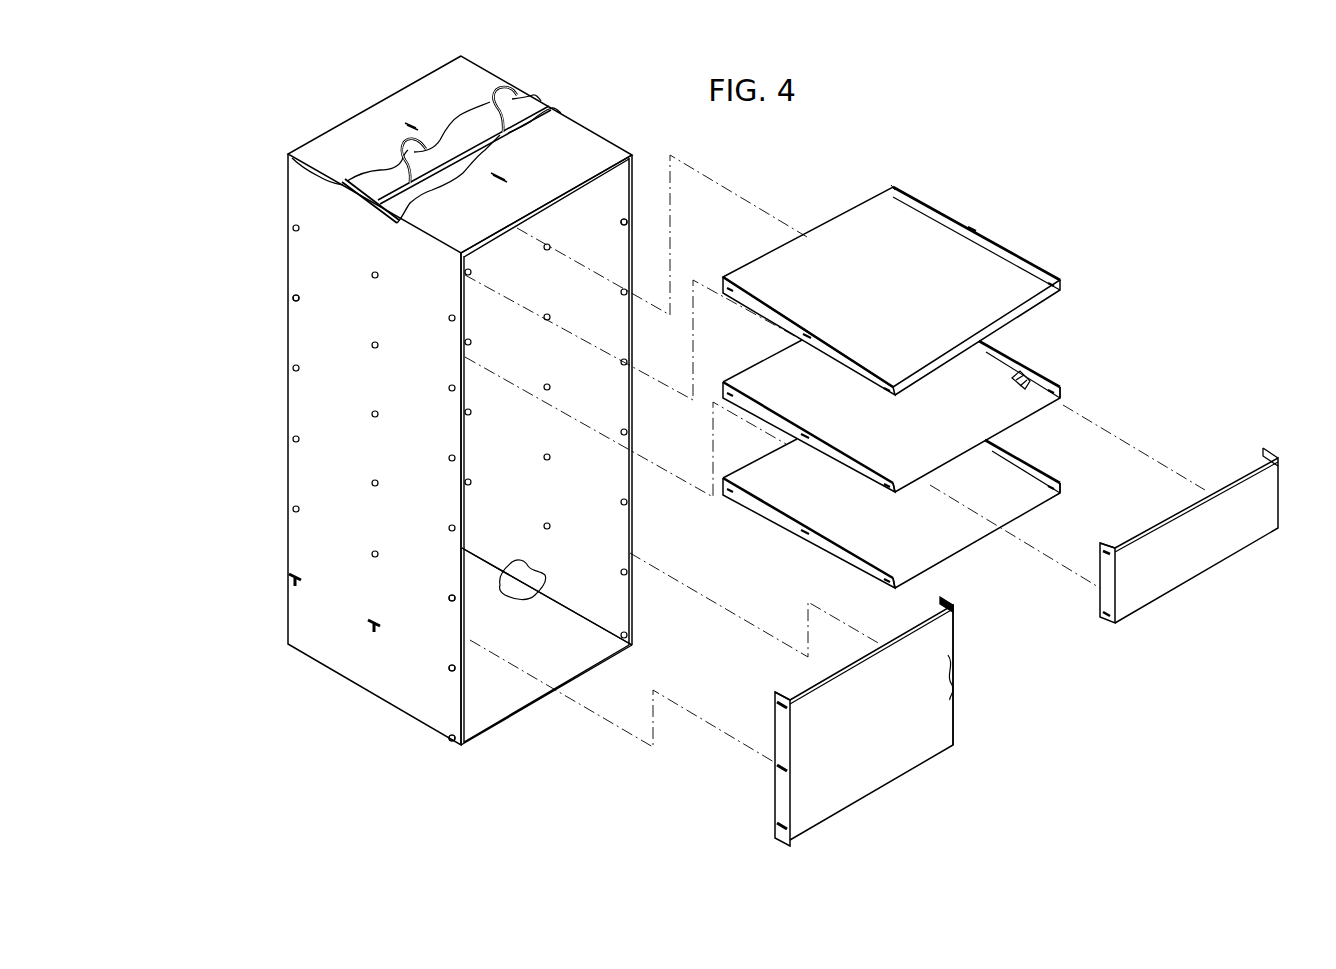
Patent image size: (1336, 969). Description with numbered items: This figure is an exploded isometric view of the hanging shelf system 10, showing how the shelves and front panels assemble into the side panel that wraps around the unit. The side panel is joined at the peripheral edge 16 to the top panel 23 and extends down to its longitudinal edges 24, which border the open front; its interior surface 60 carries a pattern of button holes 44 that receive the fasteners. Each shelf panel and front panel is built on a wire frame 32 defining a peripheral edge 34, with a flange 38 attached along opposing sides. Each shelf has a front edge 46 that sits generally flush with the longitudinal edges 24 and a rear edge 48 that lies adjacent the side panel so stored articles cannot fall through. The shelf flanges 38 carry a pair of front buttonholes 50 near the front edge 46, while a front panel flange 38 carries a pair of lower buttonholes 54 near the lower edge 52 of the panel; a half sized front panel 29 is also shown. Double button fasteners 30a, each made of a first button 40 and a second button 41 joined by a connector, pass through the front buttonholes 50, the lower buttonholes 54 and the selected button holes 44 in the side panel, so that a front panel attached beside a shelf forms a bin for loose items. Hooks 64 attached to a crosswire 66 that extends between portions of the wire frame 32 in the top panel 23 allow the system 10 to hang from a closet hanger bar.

The hanging shelf system 10 is at (403, 86).
The peripheral edge 16 is at (598, 134).
The top wall 23 is at (292, 158).
The longitudinal edge 24 is at (635, 247).
The half sized front panel 29 is at (1280, 478).
The double button fastener 30a is at (292, 300).
The wire frame 32 is at (541, 110).
The peripheral edge 34 is at (815, 455).
The flange 38 is at (983, 237).
The first button 40 is at (295, 509).
The second button 41 is at (552, 314).
The button holes 44 is at (295, 579).
The front edge 46 is at (1028, 311).
The rear edge 48 is at (838, 218).
The front buttonholes 50 is at (1066, 388).
The lower edge 52 is at (873, 790).
The lower buttonholes 54 is at (1103, 615).
The interior surface 60 is at (508, 369).
The hook 64 is at (405, 138).
The crosswire 66 is at (519, 96).